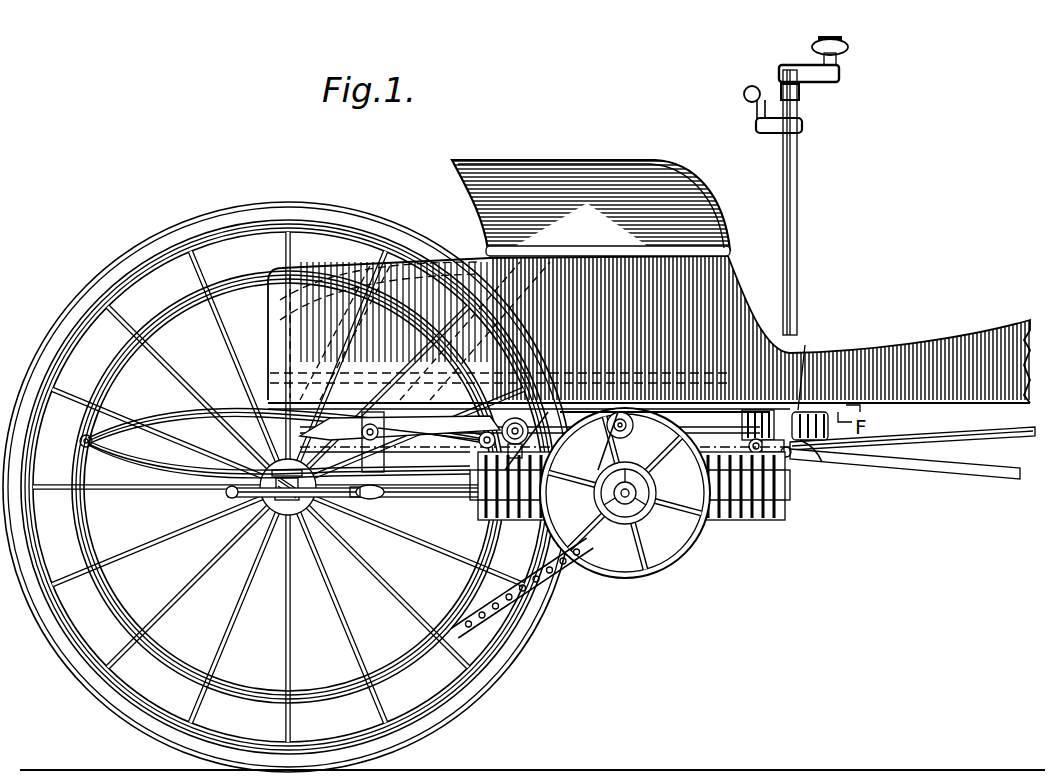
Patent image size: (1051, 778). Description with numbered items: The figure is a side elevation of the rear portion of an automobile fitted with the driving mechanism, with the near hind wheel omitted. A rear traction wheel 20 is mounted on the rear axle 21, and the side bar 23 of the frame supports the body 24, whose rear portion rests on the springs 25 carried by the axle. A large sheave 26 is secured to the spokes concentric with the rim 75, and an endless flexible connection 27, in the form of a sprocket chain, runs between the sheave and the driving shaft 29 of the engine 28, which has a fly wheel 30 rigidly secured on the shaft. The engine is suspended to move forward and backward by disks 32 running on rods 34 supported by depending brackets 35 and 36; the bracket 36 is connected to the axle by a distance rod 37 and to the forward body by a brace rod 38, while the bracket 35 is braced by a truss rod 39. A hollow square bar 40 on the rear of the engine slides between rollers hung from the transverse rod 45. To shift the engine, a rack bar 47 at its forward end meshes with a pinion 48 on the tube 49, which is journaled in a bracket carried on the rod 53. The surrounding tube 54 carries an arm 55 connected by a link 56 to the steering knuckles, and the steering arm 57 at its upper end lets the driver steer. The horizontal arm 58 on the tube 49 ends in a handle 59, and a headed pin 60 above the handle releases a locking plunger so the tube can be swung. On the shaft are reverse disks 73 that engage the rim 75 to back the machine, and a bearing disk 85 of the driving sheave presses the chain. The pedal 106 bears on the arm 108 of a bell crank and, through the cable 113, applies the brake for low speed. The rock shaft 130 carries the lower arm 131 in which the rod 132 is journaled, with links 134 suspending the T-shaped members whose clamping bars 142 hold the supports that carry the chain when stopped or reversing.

The rear traction wheel 20 is at (458, 710).
The rear axle 21 is at (258, 490).
The side bar 23 is at (300, 397).
The body 24 is at (730, 270).
The spring 25 is at (160, 424).
The sheave 26 is at (240, 692).
The endless flexible connection 27 is at (572, 548).
The engine 28 is at (466, 560).
The driving shaft 29 is at (624, 500).
The fly wheel 30 is at (676, 540).
The disk 32 is at (628, 414).
The rod 34 is at (578, 400).
The depending bracket 35 is at (545, 410).
The depending bracket 36 is at (770, 408).
The distance rod 37 is at (762, 452).
The brace rod 38 is at (985, 437).
The truss rod 39 is at (440, 454).
The bar 40 is at (358, 398).
The rod 45 is at (396, 398).
The rack bar 47 is at (796, 446).
The pinion 48 is at (790, 456).
The tube 49 is at (800, 98).
The rod 53 is at (806, 346).
The tube 54 is at (798, 178).
The arm 55 is at (810, 410).
The link 56 is at (993, 470).
The steering arm 57 is at (764, 126).
The horizontal arm 58 is at (812, 67).
The handle 59 is at (847, 46).
The headed pin 60 is at (832, 36).
The reverse disk 73 is at (648, 512).
The rim 75 is at (312, 755).
The bearing disk 85 is at (700, 522).
The pedal 106 is at (730, 366).
The arm 108 is at (740, 422).
The cable 113 is at (619, 410).
The rock shaft 130 is at (510, 418).
The lower arm 131 is at (398, 498).
The rod 132 is at (468, 498).
The link 134 is at (528, 520).
The clamping bar 142 is at (420, 432).